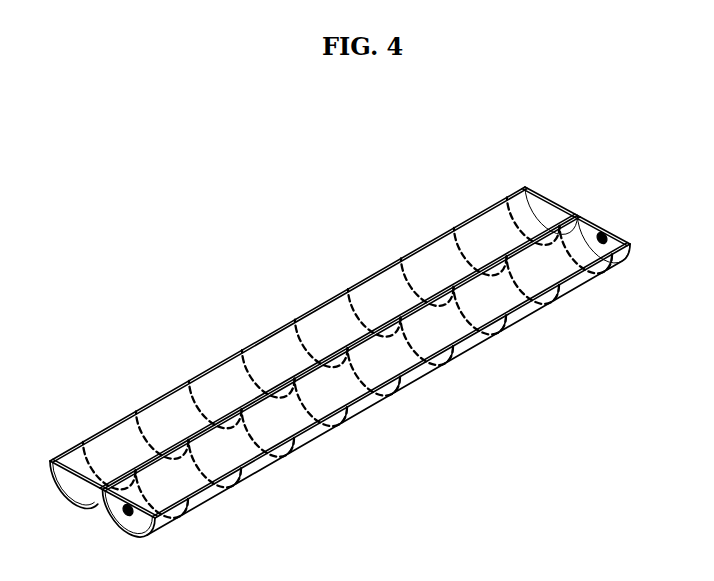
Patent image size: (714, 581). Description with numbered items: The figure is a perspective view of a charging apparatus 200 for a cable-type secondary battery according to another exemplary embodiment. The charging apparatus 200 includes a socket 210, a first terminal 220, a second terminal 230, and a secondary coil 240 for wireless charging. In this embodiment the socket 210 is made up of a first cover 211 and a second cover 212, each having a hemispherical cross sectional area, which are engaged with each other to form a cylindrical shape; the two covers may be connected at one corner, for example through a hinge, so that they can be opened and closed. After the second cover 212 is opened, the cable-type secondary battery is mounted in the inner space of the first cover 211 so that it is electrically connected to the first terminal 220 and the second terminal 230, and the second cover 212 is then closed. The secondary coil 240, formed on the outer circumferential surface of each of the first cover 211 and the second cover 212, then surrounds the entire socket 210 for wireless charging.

The charging apparatus 200 is at (336, 130).
The socket 210 is at (580, 124).
The first cover 211 is at (629, 247).
The second cover 212 is at (529, 194).
The first terminal 220 is at (599, 235).
The second terminal 230 is at (123, 512).
The secondary coil for wireless charging 240 is at (413, 257).